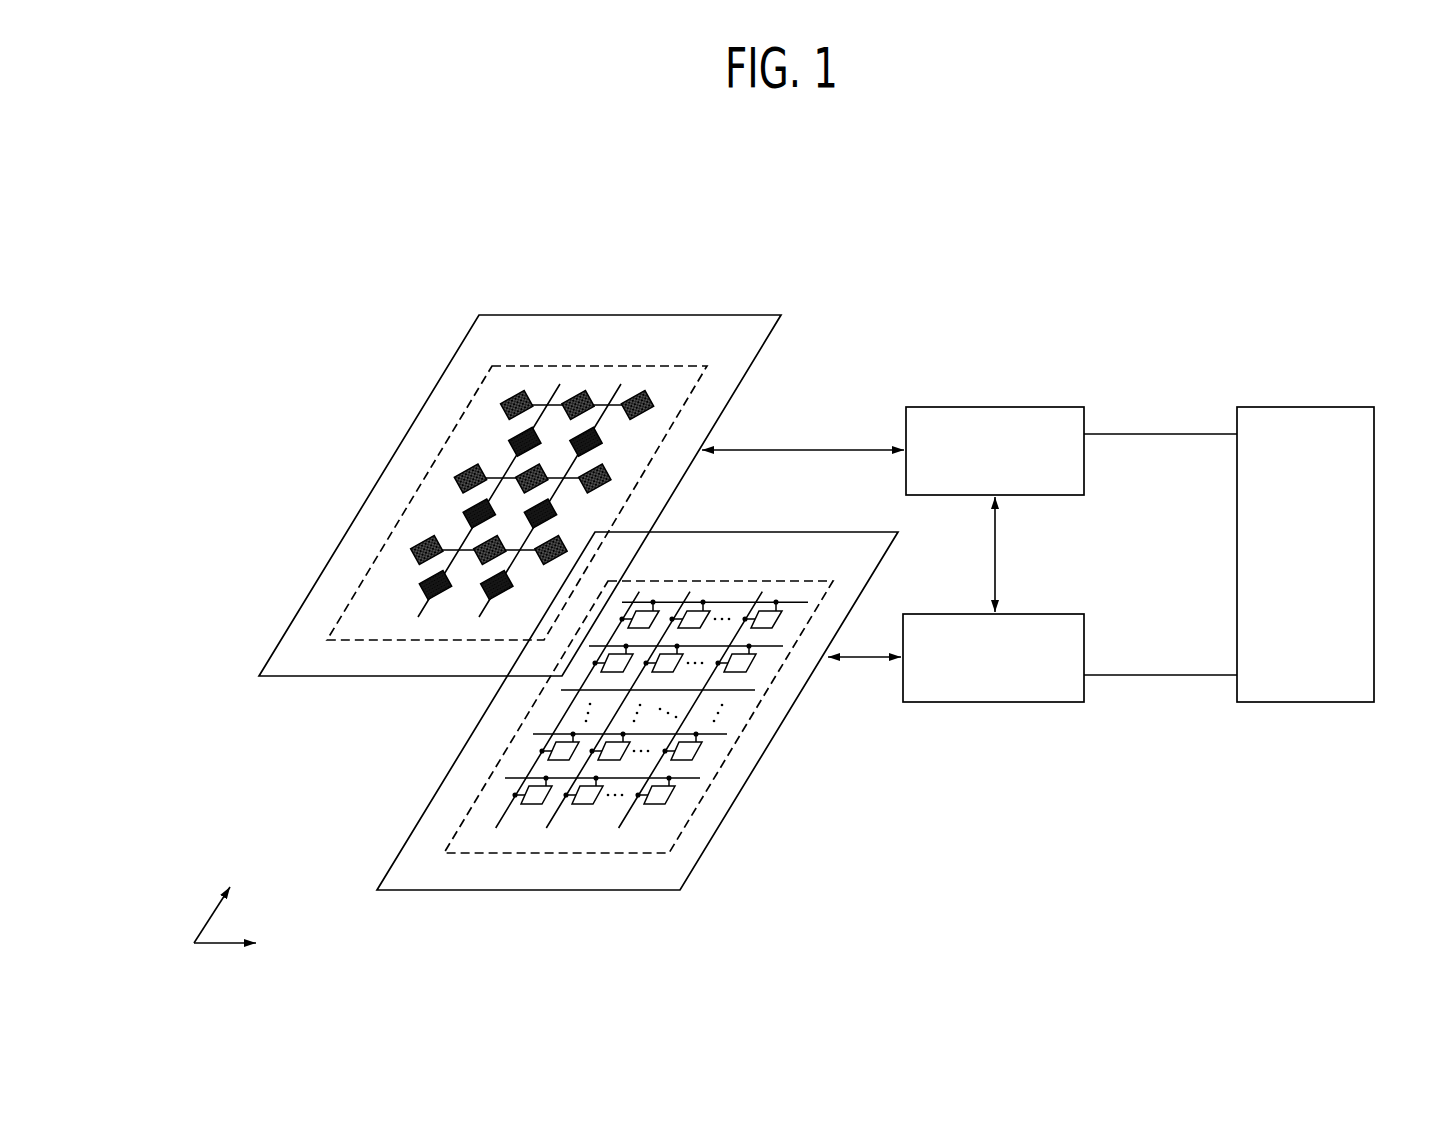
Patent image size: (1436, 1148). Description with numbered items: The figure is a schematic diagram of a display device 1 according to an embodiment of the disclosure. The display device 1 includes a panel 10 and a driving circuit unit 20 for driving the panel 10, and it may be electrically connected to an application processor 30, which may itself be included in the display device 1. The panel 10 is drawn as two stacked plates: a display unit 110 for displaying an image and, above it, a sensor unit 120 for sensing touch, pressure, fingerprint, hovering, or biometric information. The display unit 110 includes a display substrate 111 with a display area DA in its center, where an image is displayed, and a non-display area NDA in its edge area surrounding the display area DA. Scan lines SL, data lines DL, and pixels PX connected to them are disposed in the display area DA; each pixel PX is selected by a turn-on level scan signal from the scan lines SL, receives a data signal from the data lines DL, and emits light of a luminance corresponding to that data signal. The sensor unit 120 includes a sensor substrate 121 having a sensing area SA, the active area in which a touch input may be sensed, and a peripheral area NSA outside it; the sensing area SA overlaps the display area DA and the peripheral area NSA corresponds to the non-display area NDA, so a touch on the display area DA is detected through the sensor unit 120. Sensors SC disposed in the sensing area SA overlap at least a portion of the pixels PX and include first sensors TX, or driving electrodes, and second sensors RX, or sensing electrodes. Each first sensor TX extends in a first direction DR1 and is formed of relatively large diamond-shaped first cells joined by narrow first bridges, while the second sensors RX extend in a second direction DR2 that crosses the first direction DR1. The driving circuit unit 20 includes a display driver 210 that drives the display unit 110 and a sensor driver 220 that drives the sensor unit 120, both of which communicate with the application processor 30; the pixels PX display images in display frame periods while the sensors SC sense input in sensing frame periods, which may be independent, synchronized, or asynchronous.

The display device 1 is at (908, 258).
The panel 10 is at (321, 700).
The display unit 110 is at (436, 781).
The display substrate 111 is at (702, 854).
The sensor unit 120 is at (418, 682).
The sensor substrate 121 is at (383, 467).
The driving circuit unit 20 is at (1146, 465).
The display driver 210 is at (1084, 648).
The sensor driver 220 is at (1084, 450).
The application processor 30 is at (1305, 407).
The sensing area SA is at (697, 359).
The peripheral area NSA is at (697, 413).
The sensors SC is at (353, 365).
The second sensors RX is at (509, 402).
The first sensors TX is at (508, 438).
The display area DA is at (796, 576).
The non-display area NDA is at (830, 604).
The pixels PX is at (752, 663).
The scan lines SL is at (713, 735).
The data lines DL is at (655, 769).
The first direction DR1 is at (219, 899).
The second direction DR2 is at (246, 945).